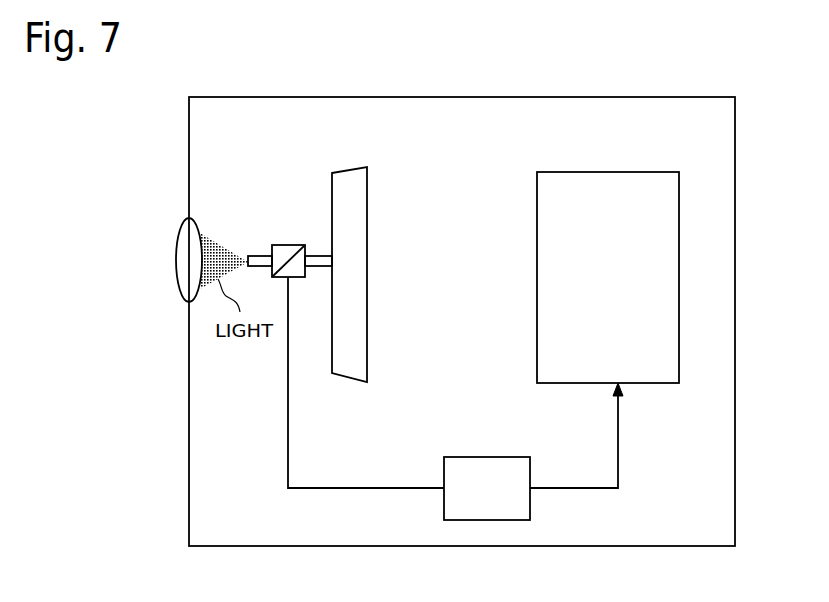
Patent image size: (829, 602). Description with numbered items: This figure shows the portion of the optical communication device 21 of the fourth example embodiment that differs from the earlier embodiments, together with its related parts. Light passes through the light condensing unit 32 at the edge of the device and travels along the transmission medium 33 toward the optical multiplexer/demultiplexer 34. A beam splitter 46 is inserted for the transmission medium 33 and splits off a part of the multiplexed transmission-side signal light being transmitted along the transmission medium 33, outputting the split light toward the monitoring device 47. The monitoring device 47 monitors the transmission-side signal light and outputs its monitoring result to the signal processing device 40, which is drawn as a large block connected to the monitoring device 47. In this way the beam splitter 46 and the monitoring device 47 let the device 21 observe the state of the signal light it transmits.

The optical communication device 21 is at (683, 97).
The light condensing unit 32 is at (191, 218).
The transmission medium 33 is at (258, 256).
The optical multiplexer/demultiplexer 34 is at (340, 173).
The signal processing device 40 is at (633, 172).
The beam splitter 46 is at (284, 245).
The monitoring device 47 is at (484, 457).